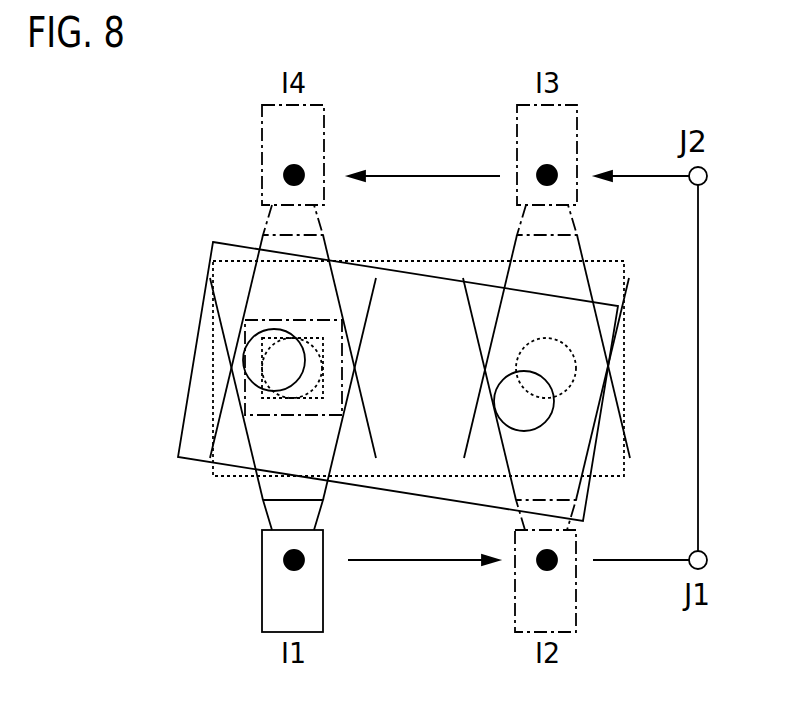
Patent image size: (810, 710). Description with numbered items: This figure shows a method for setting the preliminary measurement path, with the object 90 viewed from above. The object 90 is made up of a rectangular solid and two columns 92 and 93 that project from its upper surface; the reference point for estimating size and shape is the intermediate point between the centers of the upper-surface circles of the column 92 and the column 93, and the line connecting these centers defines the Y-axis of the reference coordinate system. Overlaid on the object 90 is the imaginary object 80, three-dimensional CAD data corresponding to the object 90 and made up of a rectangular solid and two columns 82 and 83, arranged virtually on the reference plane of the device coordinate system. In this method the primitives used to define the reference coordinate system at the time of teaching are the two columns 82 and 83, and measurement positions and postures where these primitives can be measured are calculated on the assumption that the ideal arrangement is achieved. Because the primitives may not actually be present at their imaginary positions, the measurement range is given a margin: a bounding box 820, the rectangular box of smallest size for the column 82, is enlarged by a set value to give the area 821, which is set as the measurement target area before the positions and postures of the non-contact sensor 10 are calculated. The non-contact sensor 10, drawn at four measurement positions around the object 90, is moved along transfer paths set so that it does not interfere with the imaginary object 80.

The non-contact sensor 10 is at (263, 138).
The imaginary object 80 is at (637, 358).
The column 82 is at (323, 393).
The column 83 is at (525, 343).
The object 90 is at (180, 355).
The column 92 is at (253, 392).
The column 93 is at (554, 410).
The bounding box 820 is at (312, 337).
The area 821 is at (252, 313).